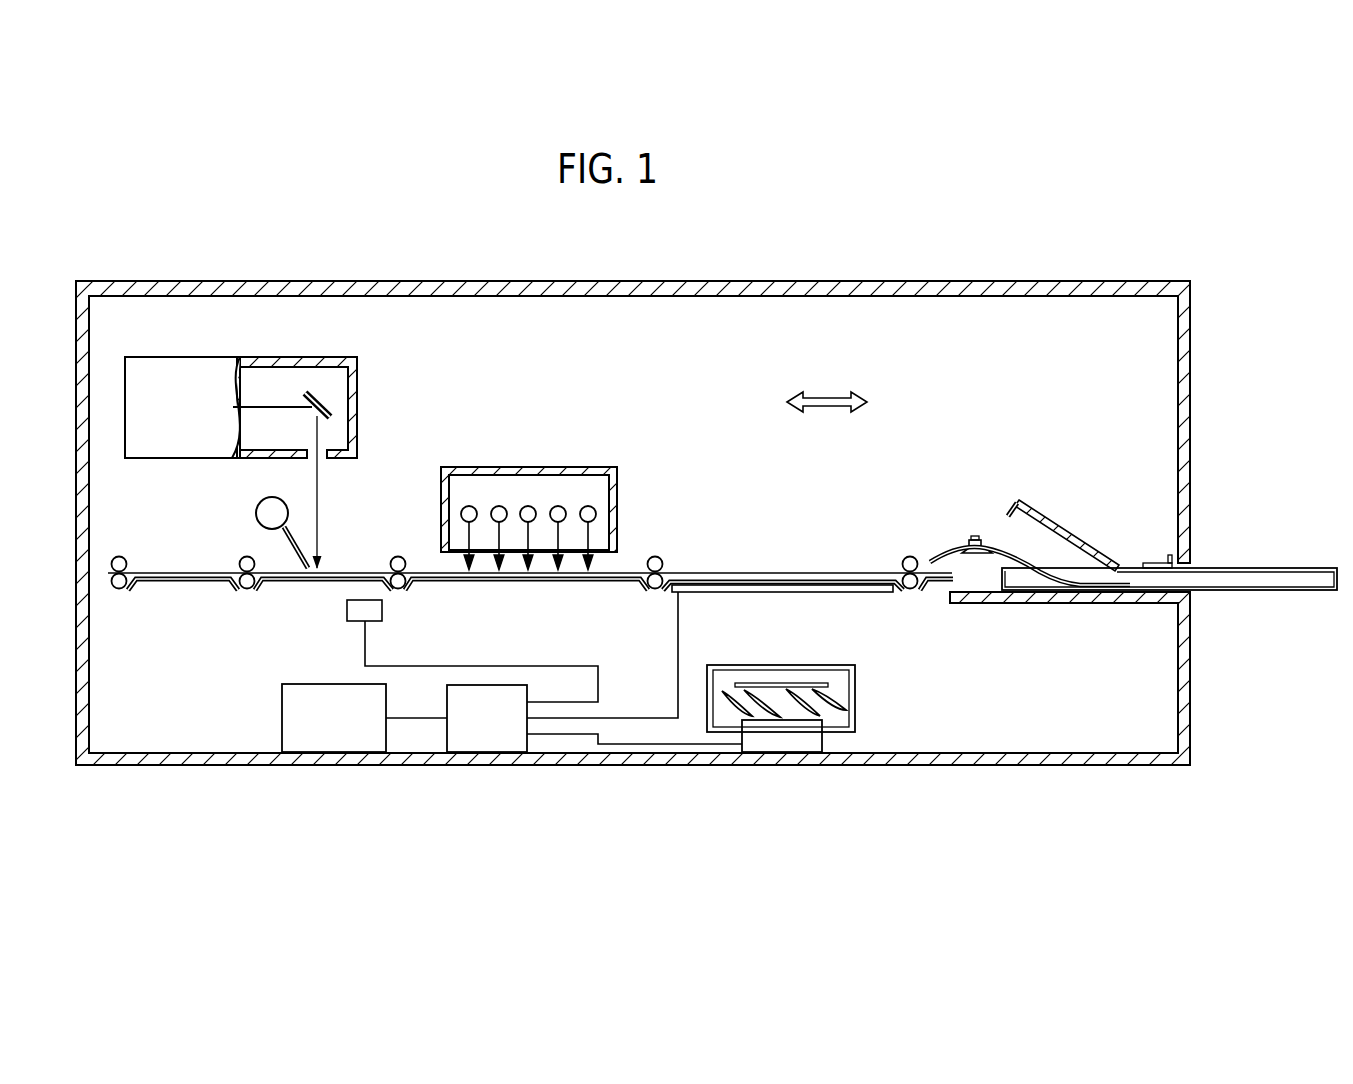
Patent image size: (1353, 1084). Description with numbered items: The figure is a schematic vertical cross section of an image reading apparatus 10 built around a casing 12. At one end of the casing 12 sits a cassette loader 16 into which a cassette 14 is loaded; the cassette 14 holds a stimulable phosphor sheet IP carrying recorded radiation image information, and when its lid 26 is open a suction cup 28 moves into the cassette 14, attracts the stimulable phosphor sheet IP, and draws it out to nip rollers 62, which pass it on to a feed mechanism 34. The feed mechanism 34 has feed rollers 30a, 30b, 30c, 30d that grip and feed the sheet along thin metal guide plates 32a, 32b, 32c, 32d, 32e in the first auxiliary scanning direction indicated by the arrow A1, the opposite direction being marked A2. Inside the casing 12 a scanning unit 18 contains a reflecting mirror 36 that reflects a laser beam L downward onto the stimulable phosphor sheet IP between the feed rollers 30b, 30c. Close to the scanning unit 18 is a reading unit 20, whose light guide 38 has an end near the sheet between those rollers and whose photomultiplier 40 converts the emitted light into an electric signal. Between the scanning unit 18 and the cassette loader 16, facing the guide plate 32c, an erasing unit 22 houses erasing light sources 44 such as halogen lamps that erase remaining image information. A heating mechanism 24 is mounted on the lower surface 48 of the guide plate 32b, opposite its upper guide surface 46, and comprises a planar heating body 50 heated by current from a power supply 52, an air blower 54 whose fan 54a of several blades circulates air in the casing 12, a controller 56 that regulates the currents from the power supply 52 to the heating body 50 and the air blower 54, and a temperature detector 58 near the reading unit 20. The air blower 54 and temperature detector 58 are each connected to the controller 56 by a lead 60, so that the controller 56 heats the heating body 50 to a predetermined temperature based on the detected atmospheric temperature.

The image reading apparatus 10 is at (962, 244).
The casing 12 is at (458, 280).
The cassette 14 is at (1269, 565).
The cassette loader 16 is at (1190, 565).
The scanning unit 18 is at (310, 356).
The reading unit 20 is at (246, 517).
The erasing unit 22 is at (529, 485).
The heating mechanism 24 is at (782, 585).
The lid 26 is at (1076, 540).
The suction cup 28 is at (975, 538).
The feed roller 30a is at (655, 556).
The feed roller 30b is at (398, 556).
The feed roller 30c is at (249, 590).
The feed roller 30d is at (121, 590).
The guide plate 32a is at (932, 592).
The guide plate 32b is at (814, 588).
The guide plate 32c is at (511, 586).
The guide plate 32d is at (316, 585).
The guide plate 32e is at (184, 585).
The feed mechanism 34 is at (808, 552).
The reflecting mirror 36 is at (334, 410).
The light guide 38 is at (290, 544).
The photomultiplier 40 is at (265, 502).
The erasing light sources 44 is at (495, 508).
The upper guide surface 46 is at (703, 578).
The lower surface 48 is at (782, 620).
The heating body 50 is at (756, 595).
The power supply 52 is at (335, 746).
The air blower 54 is at (816, 737).
The fan 54a is at (836, 703).
The controller 56 is at (484, 746).
The temperature detector 58 is at (384, 611).
The lead 60 is at (577, 665).
The nip rollers 62 is at (909, 556).
The laser beam L is at (320, 501).
The stimulable phosphor sheet IP is at (1023, 555).
The first auxiliary scanning direction A1 is at (812, 403).
The conveying direction A2 is at (886, 403).